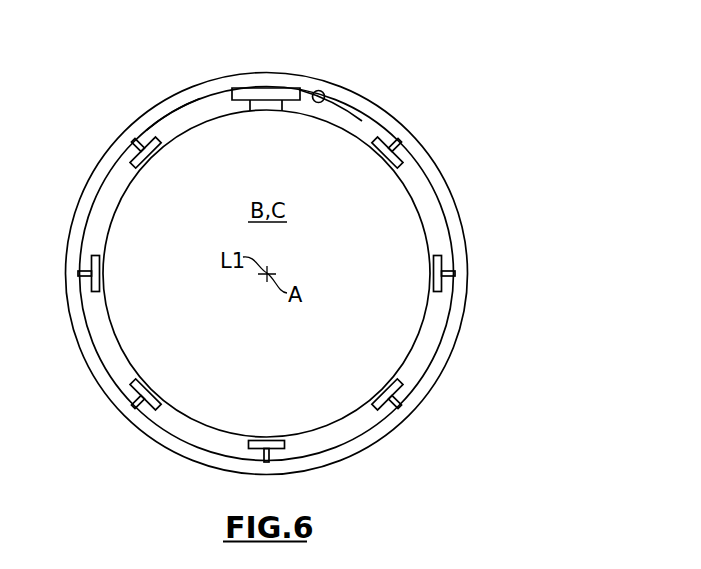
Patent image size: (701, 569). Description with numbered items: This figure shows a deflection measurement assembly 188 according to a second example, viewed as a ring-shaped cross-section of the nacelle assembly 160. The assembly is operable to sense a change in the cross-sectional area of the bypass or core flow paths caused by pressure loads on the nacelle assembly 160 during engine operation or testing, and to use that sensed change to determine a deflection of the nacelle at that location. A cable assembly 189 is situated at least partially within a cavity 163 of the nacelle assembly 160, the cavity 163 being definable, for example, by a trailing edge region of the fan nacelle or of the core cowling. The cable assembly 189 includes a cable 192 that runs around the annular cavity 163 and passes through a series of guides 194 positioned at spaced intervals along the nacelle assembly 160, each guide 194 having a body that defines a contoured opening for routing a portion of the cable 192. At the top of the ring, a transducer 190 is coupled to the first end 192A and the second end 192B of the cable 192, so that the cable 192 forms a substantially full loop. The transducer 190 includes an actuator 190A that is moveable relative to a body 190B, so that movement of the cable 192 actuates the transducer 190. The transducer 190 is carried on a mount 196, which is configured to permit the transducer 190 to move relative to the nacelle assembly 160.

The nacelle assembly 160 is at (303, 274).
The cavity 163 is at (455, 235).
The deflection measurement assembly 188 is at (305, 245).
The cable assembly 189 is at (407, 119).
The transducer 190 is at (281, 97).
The actuator 190A is at (320, 90).
The body 190B is at (238, 88).
The cable 192 is at (306, 263).
The first end of cable 192A is at (333, 97).
The second end of cable 192B is at (172, 108).
The guide 194 is at (305, 279).
The mount 196 is at (250, 102).